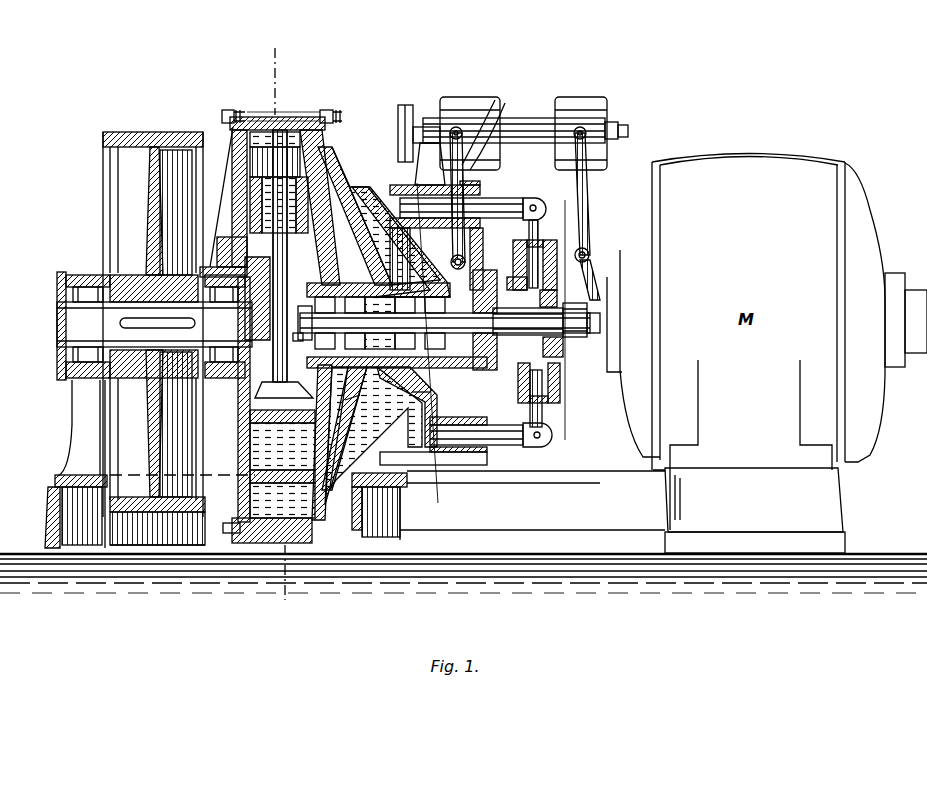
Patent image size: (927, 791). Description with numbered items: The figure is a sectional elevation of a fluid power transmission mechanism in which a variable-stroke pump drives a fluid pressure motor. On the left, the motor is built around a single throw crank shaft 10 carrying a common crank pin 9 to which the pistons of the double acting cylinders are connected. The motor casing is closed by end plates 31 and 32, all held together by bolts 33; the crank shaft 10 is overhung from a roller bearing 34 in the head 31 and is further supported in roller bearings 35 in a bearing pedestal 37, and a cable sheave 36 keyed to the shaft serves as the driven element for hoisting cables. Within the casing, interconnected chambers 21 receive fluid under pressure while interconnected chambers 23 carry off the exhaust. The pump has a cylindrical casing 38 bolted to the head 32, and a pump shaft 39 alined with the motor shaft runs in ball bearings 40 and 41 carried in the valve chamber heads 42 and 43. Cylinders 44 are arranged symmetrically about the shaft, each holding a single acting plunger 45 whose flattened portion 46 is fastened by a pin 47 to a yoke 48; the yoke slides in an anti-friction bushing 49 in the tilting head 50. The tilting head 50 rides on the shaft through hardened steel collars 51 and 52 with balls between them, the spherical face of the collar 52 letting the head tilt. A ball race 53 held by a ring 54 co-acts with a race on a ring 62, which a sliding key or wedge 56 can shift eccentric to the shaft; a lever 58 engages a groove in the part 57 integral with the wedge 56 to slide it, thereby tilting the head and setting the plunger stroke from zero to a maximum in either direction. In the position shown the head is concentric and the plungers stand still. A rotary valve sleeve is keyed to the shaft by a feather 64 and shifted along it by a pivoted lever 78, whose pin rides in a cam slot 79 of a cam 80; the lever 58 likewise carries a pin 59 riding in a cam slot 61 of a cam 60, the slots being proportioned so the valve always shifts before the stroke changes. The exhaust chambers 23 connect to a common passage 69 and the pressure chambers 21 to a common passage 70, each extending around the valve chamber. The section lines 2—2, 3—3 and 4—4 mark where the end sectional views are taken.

The section line 2— 2 is at (429, 324).
The section line 3— 3 is at (420, 343).
The section line 4— 4 is at (568, 315).
The crank pin 9 is at (280, 285).
The crank shaft 10 is at (80, 323).
The pressure chambers 21 is at (270, 505).
The exhaust chambers 23 is at (270, 443).
The end plate 31 is at (233, 127).
The end plate 32 is at (322, 137).
The bolts 33 is at (234, 110).
The roller bearing 34 is at (203, 380).
The roller bearings 35 is at (83, 272).
The cable sheave 36 is at (135, 135).
The bearing pedestal 37 is at (85, 430).
The pump casing 38 is at (488, 458).
The pump shaft 39 is at (587, 320).
The ball bearing 40 is at (460, 370).
The ball bearing 41 is at (297, 337).
The valve chamber head 42 is at (490, 365).
The valve chamber head 43 is at (300, 379).
The pump cylinders 44 is at (385, 190).
The plunger 45 is at (500, 210).
The flattened portion 46 is at (533, 200).
The pin 47 is at (545, 210).
The yoke 48 is at (537, 227).
The anti-friction bushing 49 is at (573, 277).
The tilting head 50 is at (575, 300).
The hardened steel collar 51 is at (563, 363).
The hardened steel collar 52 is at (503, 280).
The ball race 53 is at (553, 278).
The ring 54 is at (567, 353).
The sliding key or wedge 56 is at (560, 292).
The grooved part 57 is at (583, 308).
The lever 58 is at (553, 253).
The pin 59 is at (580, 133).
The cam 60 is at (593, 103).
The cam slot 61 is at (568, 98).
The ring 62 is at (537, 342).
The feather 64 is at (420, 390).
The exhaust passage 69 is at (353, 397).
The pressure passage 70 is at (330, 400).
The pivoted lever 78 is at (450, 185).
The cam slot 79 is at (490, 97).
The cam 80 is at (458, 98).